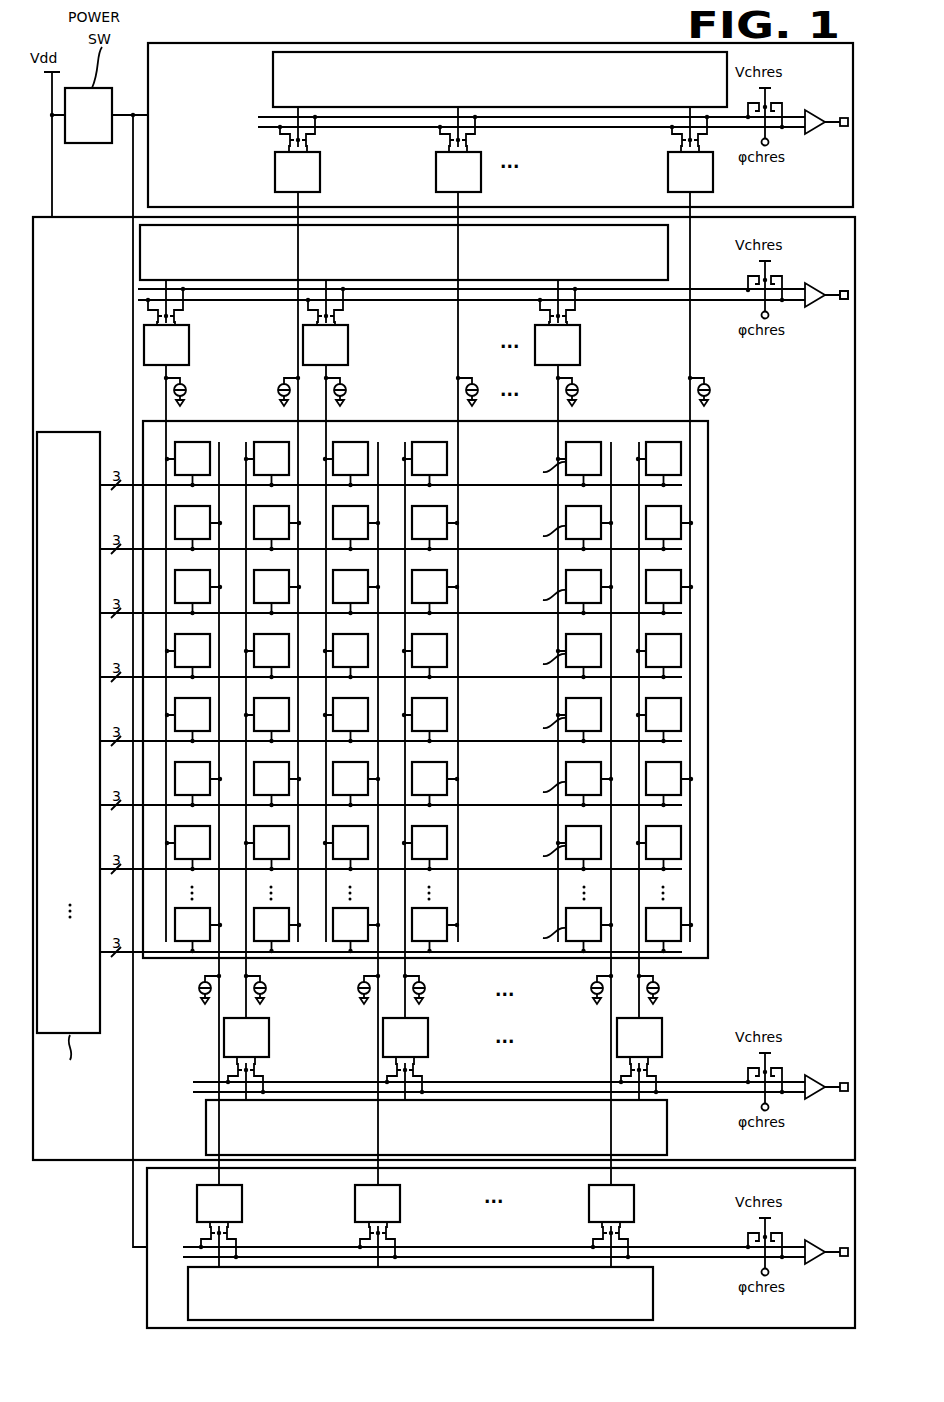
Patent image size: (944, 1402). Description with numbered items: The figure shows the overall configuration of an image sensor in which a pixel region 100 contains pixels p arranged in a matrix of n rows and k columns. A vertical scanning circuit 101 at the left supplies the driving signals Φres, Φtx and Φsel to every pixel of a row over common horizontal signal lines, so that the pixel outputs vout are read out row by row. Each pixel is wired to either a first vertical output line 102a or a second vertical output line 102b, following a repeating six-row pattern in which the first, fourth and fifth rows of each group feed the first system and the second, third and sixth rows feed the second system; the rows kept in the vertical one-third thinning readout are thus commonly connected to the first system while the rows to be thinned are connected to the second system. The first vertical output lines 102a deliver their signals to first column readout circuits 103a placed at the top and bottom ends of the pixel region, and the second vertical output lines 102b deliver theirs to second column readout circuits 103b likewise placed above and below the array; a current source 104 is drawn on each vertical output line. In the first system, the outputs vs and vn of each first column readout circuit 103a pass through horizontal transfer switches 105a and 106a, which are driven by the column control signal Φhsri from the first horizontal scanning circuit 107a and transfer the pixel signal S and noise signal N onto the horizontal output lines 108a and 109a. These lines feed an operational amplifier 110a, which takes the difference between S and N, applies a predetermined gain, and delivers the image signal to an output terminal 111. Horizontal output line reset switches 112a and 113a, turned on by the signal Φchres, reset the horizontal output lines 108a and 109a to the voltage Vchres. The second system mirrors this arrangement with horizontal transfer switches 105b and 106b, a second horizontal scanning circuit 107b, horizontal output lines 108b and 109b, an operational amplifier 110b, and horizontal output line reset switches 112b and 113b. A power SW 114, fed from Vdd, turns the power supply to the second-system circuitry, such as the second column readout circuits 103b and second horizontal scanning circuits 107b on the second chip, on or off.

The pixel region 100 is at (207, 437).
The vertical scanning circuit 101 is at (84, 1023).
The first vertical output line 102a is at (166, 400).
The second vertical output line 102b is at (298, 348).
The first column readout circuit 103a is at (144, 335).
The second column readout circuit 103b is at (320, 172).
The constant current source 104 is at (183, 392).
The horizontal transfer switch 105a is at (148, 312).
The horizontal transfer switch 105b is at (280, 140).
The horizontal transfer switch 106a is at (185, 312).
The horizontal transfer switch 106b is at (318, 140).
The first horizontal scanning circuit 107a is at (140, 246).
The second horizontal scanning circuit 107b is at (273, 60).
The horizontal output line 108a is at (140, 300).
The horizontal output line 108b is at (272, 128).
The horizontal output line 109a is at (140, 289).
The horizontal output line 109b is at (260, 116).
The operational amplifier 110a is at (815, 306).
The operational amplifier 110b is at (813, 130).
The output terminal 111 is at (843, 289).
The horizontal output line reset switch 112a is at (782, 278).
The horizontal output line reset switch 112b is at (782, 100).
The horizontal output line reset switch 113a is at (748, 288).
The horizontal output line reset switch 113b is at (748, 118).
The power SW 114 is at (104, 125).